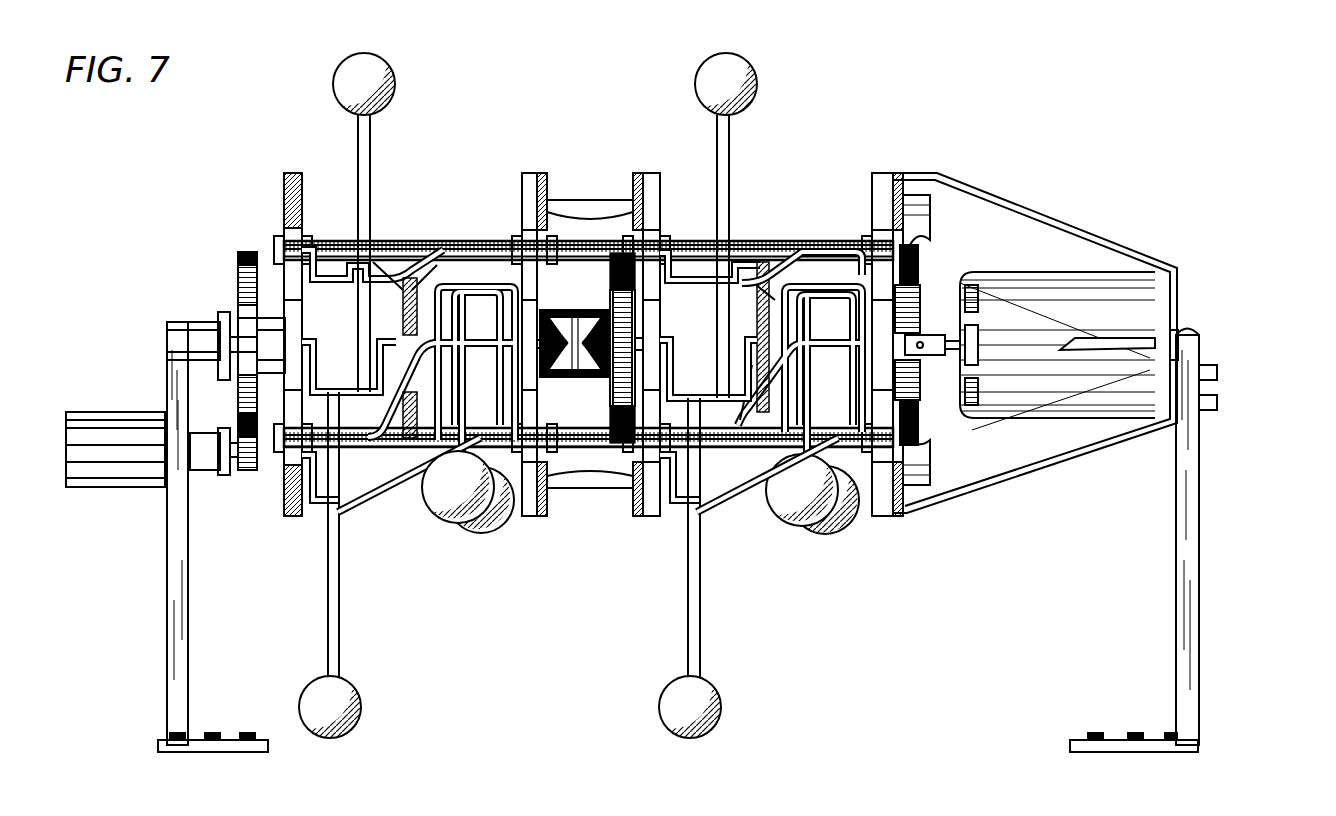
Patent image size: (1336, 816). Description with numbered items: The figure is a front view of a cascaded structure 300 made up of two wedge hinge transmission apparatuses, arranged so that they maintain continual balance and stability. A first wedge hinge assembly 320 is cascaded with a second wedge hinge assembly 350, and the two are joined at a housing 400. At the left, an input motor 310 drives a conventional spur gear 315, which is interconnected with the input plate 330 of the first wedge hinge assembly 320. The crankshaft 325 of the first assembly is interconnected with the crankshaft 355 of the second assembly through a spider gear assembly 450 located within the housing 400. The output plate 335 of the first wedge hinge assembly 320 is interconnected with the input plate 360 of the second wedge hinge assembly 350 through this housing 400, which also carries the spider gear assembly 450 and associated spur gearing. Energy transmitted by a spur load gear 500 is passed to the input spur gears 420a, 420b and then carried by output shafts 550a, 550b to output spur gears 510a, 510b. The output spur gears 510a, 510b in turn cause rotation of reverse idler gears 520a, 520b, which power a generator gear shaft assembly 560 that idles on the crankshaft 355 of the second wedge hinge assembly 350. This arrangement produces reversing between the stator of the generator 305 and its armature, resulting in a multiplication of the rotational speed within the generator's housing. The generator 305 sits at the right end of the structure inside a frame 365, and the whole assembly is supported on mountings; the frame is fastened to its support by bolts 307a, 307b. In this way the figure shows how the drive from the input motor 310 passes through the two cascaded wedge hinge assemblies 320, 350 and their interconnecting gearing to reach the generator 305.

The rotary apparatus 300 is at (847, 105).
The generator 305 is at (1070, 420).
The bolt 307a is at (1195, 335).
The bolt 307b is at (1215, 392).
The input motor 310 is at (122, 410).
The spur gear 315 is at (243, 257).
The first wedge hinge assembly 320 is at (409, 332).
The crankshaft 325 is at (342, 313).
The input plate 330 is at (290, 176).
The output plate 335 is at (528, 172).
The second wedge hinge assembly 350 is at (770, 240).
The crankshaft 355 is at (706, 316).
The input plate 360 is at (650, 172).
The housing 365 is at (885, 173).
The housing 400 is at (598, 492).
The input spur gear 420a is at (628, 258).
The input spur gear 420b is at (620, 443).
The spider gear assembly 450 is at (592, 312).
The spur load gear 500 is at (612, 395).
The output spur gear 510a is at (920, 262).
The output spur gear 510b is at (920, 420).
The reverse idler gear 520a is at (962, 290).
The reverse idler gear 520b is at (965, 380).
The output shaft 550a is at (847, 208).
The output shaft 550b is at (742, 492).
The generator gear shaft assembly 560 is at (945, 342).